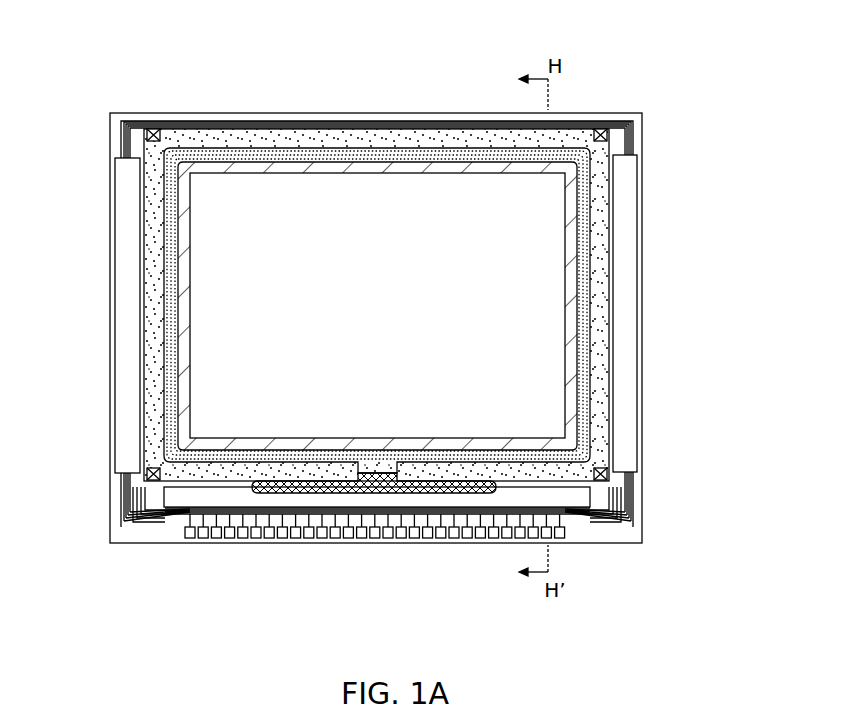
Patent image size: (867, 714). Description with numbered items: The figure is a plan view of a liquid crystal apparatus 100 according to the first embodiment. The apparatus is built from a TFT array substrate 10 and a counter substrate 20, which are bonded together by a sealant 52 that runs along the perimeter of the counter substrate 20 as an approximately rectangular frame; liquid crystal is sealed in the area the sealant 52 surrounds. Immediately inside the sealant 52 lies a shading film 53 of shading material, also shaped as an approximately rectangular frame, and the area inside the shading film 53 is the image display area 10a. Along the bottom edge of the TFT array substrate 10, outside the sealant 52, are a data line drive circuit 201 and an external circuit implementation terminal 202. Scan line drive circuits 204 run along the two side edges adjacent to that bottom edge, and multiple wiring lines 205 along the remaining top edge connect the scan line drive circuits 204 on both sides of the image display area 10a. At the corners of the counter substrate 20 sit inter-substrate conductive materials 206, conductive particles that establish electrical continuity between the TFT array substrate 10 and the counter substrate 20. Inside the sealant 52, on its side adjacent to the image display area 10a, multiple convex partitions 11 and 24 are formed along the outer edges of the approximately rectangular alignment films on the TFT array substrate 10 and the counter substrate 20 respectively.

The liquid crystal apparatus 100 is at (472, 66).
The TFT array substrate 10 is at (289, 115).
The counter substrate 20 is at (350, 122).
The image display area 10a is at (393, 319).
The wiring lines 205 is at (228, 127).
The inter-substrate conductive materials 206 is at (150, 128).
The scan line drive circuits 204 is at (127, 343).
The convex partition 24 is at (582, 220).
The convex partition 11 is at (454, 305).
The sealant 52 is at (600, 267).
The shading film 53 is at (575, 415).
The external circuit implementation terminal 202 is at (222, 542).
The data line drive circuit 201 is at (457, 495).